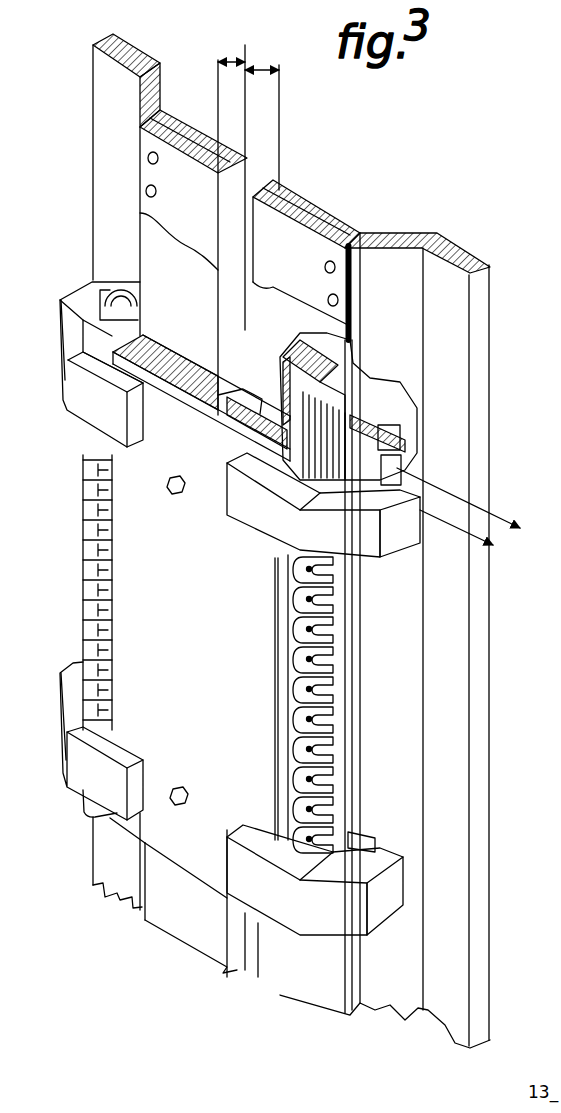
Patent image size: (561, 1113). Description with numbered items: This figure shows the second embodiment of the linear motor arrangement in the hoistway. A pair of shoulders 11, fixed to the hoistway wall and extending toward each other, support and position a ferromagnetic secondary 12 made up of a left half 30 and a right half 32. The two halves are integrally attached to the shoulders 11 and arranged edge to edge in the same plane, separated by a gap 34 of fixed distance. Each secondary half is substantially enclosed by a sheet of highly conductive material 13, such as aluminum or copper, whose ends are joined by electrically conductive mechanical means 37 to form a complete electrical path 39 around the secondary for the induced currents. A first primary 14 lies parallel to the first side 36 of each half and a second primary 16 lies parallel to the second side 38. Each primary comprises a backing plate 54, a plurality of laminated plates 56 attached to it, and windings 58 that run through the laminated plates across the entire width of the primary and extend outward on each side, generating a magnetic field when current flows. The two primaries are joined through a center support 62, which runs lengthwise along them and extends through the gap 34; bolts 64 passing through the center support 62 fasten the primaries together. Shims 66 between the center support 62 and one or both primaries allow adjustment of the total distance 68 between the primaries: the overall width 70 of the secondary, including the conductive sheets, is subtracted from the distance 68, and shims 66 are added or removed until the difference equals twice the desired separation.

The shoulder 11 is at (140, 52).
The ferromagnetic secondary 12 is at (253, 152).
The highly conductive sheet 13 is at (182, 240).
The first primary 14 is at (122, 340).
The second primary 16 is at (292, 432).
The left half 30 is at (160, 110).
The right half 32 is at (340, 218).
The gap 34 is at (268, 67).
The first side 36 is at (150, 249).
The electrically conductive mechanical means 37 is at (170, 180).
The second side 38 is at (192, 124).
The complete electrical path 39 is at (243, 204).
The backing plate 54 is at (145, 577).
The laminated plates 56 is at (345, 385).
The windings 58 is at (300, 700).
The center support 62 is at (230, 382).
The bolts 64 is at (172, 492).
The shims 66 is at (232, 382).
The total distance 68 is at (512, 540).
The overall width 70 is at (236, 58).